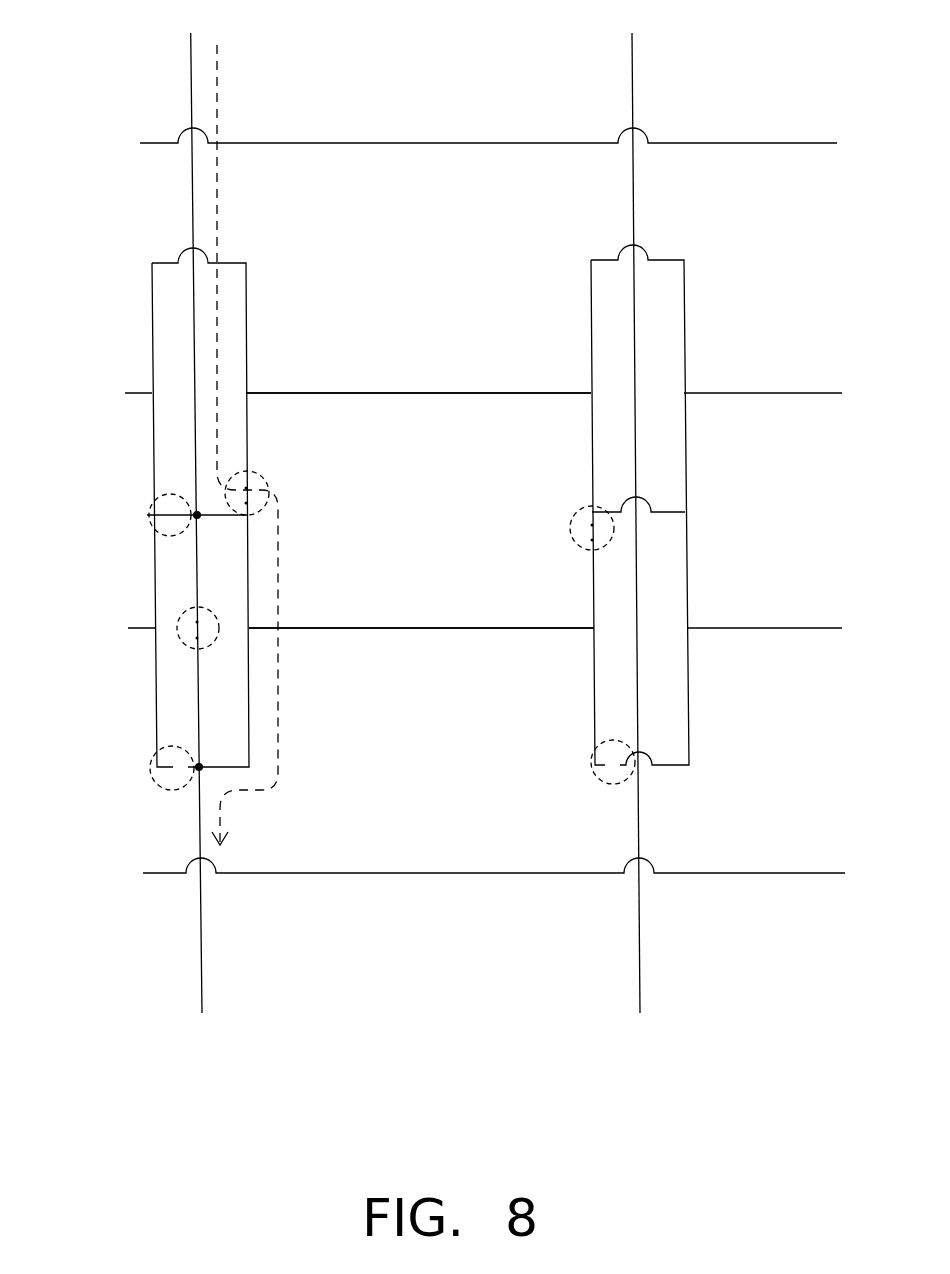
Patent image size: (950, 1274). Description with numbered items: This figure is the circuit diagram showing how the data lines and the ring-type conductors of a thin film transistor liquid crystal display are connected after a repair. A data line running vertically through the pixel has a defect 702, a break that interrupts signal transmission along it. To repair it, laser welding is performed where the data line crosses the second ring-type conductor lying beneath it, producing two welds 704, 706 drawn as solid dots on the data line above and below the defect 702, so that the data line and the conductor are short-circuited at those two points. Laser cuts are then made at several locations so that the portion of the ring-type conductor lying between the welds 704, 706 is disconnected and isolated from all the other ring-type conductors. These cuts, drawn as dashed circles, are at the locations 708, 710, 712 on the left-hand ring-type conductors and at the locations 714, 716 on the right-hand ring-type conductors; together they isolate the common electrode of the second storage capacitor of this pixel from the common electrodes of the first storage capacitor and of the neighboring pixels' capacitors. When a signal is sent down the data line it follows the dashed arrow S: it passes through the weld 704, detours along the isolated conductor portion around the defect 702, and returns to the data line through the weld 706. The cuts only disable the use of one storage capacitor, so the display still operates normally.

The defect 702 is at (218, 615).
The weld 704 is at (200, 520).
The weld 706 is at (201, 766).
The laser cut location 708 is at (158, 500).
The laser cut location 710 is at (250, 495).
The laser cut location 712 is at (168, 790).
The laser cut location 714 is at (573, 505).
The laser cut location 716 is at (606, 780).
The signal path arrow S is at (245, 445).